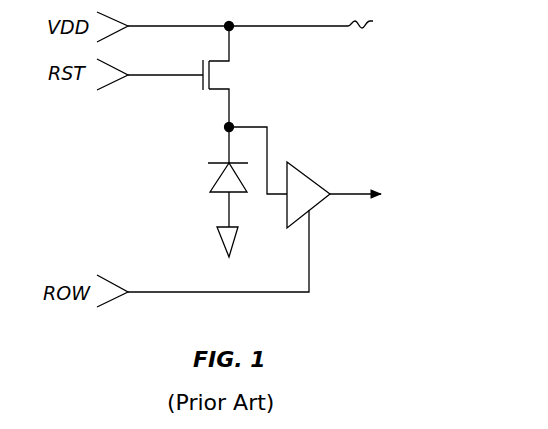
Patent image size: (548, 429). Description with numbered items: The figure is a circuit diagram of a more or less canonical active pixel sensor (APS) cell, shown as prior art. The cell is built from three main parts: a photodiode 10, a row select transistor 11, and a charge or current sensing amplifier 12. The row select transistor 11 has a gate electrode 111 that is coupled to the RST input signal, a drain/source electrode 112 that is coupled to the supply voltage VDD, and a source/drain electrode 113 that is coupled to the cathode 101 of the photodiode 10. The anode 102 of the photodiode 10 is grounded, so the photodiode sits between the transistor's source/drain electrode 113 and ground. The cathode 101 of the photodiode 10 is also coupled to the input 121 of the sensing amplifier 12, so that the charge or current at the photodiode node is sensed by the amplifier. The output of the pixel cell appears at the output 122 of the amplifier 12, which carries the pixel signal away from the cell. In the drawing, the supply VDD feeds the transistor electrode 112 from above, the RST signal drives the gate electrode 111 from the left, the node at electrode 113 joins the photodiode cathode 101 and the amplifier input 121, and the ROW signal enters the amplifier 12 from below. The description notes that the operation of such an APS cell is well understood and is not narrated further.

The photodiode 10 is at (196, 192).
The cathode 101 is at (210, 162).
The anode 102 is at (217, 195).
The row select transistor 11 is at (218, 80).
The gate electrode 111 is at (201, 88).
The drain/source electrode 112 is at (232, 53).
The source/drain electrode 113 is at (223, 115).
The sensing amplifier 12 is at (339, 173).
The input 121 is at (257, 205).
The output 122 is at (373, 211).